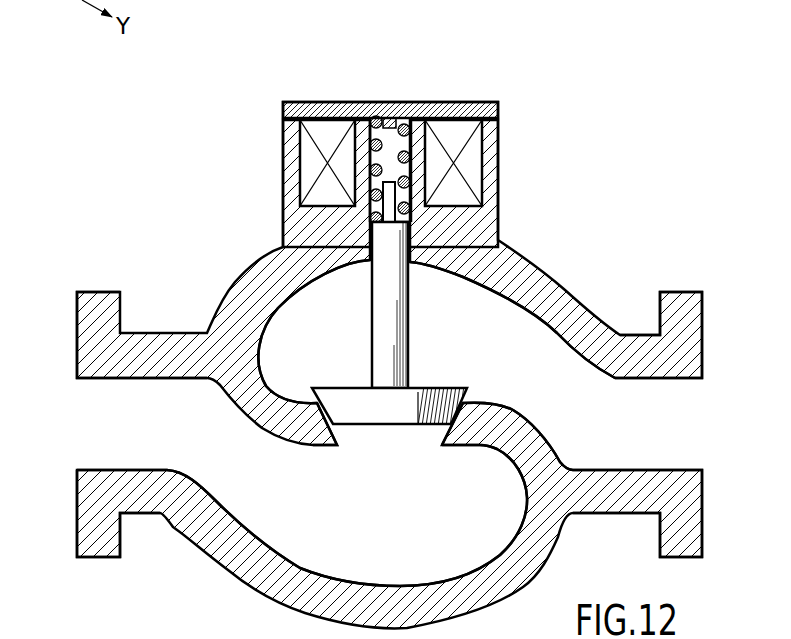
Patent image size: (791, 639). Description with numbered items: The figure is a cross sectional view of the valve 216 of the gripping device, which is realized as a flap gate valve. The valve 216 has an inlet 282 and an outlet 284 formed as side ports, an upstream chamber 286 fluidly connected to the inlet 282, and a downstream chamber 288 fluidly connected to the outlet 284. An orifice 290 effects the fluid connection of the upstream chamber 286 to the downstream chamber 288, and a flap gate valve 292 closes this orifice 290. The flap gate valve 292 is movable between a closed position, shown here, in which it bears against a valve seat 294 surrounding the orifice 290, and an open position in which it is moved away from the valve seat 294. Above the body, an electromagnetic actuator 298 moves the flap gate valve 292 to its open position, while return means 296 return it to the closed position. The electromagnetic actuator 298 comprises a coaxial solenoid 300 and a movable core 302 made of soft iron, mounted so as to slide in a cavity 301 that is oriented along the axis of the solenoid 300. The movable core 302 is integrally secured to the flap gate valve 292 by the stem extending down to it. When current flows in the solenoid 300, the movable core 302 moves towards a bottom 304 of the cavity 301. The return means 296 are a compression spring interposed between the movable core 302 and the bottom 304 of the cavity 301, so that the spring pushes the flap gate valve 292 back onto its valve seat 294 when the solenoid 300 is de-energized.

The valve 216 is at (447, 124).
The inlet 282 is at (120, 440).
The outlet 284 is at (655, 440).
The upstream chamber 286 is at (347, 515).
The downstream chamber 288 is at (436, 331).
The orifice 290 is at (338, 433).
The flap gate valve 292 is at (428, 387).
The valve seat 294 is at (458, 418).
The return means 296 is at (406, 124).
The electromagnetic actuator 298 is at (343, 98).
The coaxial solenoid 300 is at (468, 170).
The cavity 301 is at (388, 148).
The movable core 302 is at (389, 196).
The bottom of the cavity 304 is at (378, 117).